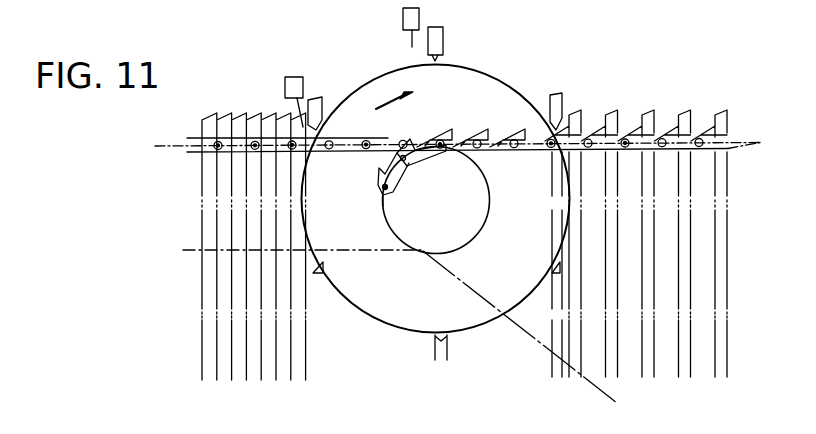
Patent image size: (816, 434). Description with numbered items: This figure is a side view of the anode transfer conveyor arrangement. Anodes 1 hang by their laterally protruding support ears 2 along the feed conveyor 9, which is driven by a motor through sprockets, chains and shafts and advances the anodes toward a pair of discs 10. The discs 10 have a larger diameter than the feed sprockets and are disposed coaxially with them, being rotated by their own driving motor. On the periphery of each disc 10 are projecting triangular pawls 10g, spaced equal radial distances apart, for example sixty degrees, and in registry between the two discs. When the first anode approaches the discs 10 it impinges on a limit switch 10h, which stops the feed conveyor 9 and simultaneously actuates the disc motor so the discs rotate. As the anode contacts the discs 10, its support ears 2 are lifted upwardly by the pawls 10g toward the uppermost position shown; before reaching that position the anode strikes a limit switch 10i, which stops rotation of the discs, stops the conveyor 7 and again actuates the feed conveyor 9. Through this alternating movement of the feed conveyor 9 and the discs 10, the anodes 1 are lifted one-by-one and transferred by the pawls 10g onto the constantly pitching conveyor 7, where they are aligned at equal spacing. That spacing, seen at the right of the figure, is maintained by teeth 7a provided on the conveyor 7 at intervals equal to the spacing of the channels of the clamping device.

The anode 1 is at (200, 226).
The support ear 2 is at (200, 125).
The conveyor 7 is at (737, 145).
The teeth 7a is at (633, 128).
The feed conveyor 9 is at (183, 150).
The disc 10 is at (502, 80).
The pawl 10g is at (443, 58).
The limit switch 10h is at (295, 77).
The limit switch 10i is at (403, 14).